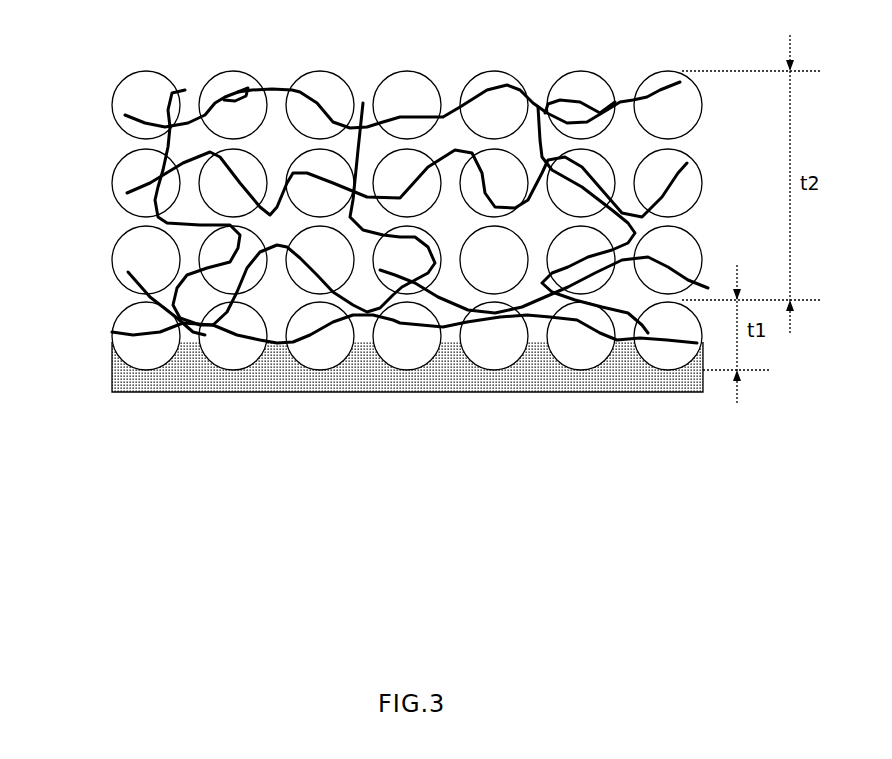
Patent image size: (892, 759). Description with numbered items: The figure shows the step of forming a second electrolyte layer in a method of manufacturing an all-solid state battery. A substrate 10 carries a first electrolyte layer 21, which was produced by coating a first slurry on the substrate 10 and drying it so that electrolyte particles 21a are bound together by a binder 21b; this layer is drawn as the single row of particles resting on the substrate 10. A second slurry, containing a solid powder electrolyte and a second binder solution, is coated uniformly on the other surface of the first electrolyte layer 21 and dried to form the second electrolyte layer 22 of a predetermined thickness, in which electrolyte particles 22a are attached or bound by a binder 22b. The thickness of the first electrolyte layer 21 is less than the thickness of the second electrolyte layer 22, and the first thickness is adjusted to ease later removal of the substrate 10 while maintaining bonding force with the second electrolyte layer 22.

The substrate 10 is at (558, 385).
The first electrolyte layer 21 is at (364, 358).
The electrolyte particles 21a is at (147, 362).
The binder 21b is at (450, 336).
The second electrolyte layer 22 is at (367, 174).
The electrolyte particles 22a is at (318, 71).
The binder 22b is at (187, 92).